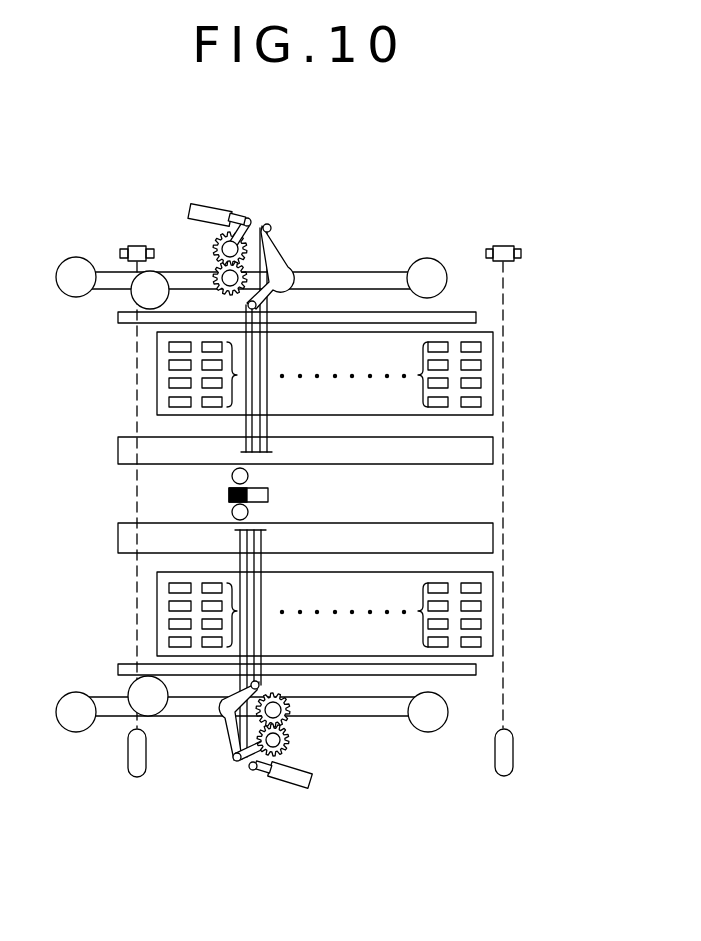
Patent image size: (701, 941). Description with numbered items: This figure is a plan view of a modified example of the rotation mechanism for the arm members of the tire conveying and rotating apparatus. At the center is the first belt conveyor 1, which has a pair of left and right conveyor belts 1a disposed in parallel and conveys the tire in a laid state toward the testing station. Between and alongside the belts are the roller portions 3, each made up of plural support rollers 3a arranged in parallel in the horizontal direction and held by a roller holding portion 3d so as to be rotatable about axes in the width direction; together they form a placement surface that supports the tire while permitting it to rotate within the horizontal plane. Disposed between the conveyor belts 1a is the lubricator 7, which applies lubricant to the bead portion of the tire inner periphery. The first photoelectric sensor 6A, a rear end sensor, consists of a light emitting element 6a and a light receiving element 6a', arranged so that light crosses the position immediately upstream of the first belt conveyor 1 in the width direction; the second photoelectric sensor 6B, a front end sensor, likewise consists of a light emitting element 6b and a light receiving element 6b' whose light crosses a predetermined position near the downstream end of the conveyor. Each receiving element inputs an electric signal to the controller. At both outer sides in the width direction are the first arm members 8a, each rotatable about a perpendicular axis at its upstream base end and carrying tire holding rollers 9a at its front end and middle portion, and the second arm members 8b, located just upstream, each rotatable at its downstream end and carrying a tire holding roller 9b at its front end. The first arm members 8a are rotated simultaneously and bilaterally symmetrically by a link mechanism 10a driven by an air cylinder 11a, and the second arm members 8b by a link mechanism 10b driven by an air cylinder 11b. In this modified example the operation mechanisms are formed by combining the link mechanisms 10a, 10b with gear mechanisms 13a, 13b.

The first belt conveyor 1 is at (118, 470).
The conveyor belt 1a is at (485, 452).
The roller portion 3 is at (496, 370).
The support roller 3a is at (440, 350).
The roller holding portion 3d is at (155, 383).
The first photoelectric sensor 6A is at (525, 750).
The second photoelectric sensor 6B is at (121, 747).
The light emitting element 6a is at (502, 783).
The light receiving element 6a' is at (500, 223).
The light emitting element 6b is at (136, 783).
The light receiving element 6b' is at (115, 221).
The lubricator 7 is at (226, 495).
The first arm member 8a is at (183, 272).
The second arm member 8b is at (362, 272).
The tire holding roller 9a is at (142, 295).
The tire holding roller 9b is at (425, 268).
The link mechanism 10a is at (224, 730).
The link mechanism 10b is at (279, 262).
The air cylinder 11a is at (285, 788).
The air cylinder 11b is at (208, 207).
The gear mechanism 13a is at (283, 728).
The gear mechanism 13b is at (251, 220).